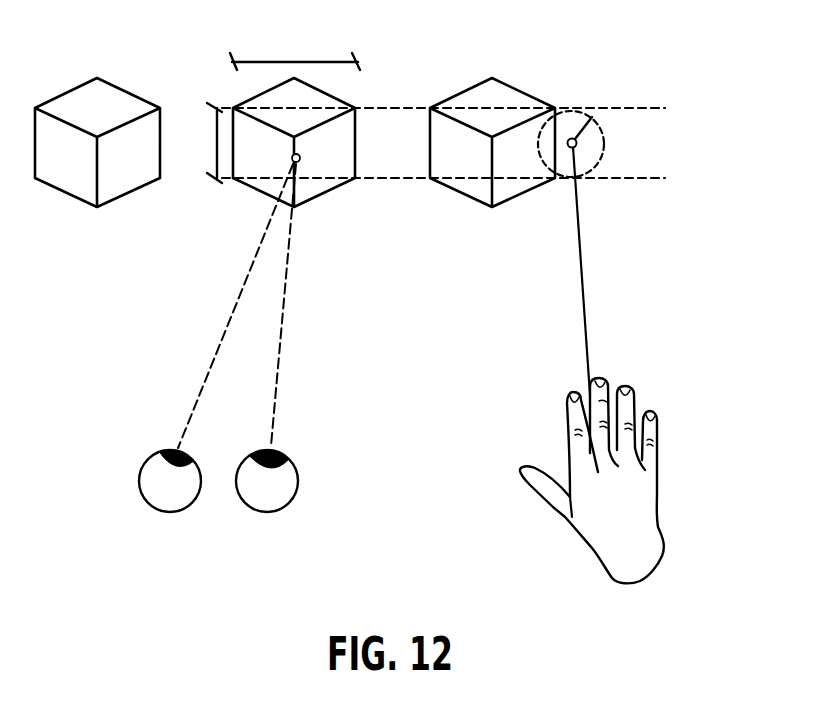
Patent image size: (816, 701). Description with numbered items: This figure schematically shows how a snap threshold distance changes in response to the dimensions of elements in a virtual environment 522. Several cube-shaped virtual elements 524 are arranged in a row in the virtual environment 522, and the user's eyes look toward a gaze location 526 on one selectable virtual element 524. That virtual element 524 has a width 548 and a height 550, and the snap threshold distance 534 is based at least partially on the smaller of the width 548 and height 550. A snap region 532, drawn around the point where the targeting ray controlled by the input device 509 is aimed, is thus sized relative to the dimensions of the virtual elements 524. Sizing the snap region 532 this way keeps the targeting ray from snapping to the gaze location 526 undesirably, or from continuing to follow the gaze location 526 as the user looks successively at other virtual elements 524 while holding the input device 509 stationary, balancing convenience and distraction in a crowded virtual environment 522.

The virtual environment 522 is at (192, 36).
The virtual element 524 is at (357, 150).
The gaze location 526 is at (291, 160).
The width 548 is at (288, 61).
The height 550 is at (217, 143).
The snap region 532 is at (605, 142).
The snap threshold distance 534 is at (587, 119).
The input device 509 is at (658, 498).